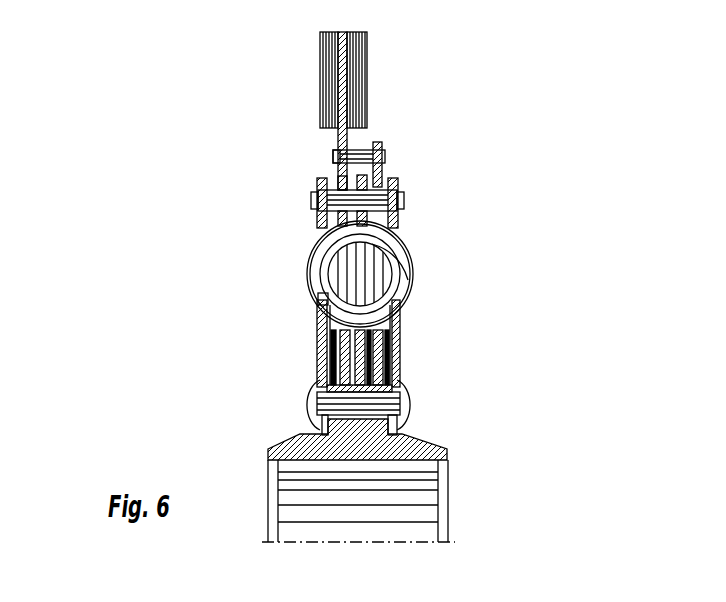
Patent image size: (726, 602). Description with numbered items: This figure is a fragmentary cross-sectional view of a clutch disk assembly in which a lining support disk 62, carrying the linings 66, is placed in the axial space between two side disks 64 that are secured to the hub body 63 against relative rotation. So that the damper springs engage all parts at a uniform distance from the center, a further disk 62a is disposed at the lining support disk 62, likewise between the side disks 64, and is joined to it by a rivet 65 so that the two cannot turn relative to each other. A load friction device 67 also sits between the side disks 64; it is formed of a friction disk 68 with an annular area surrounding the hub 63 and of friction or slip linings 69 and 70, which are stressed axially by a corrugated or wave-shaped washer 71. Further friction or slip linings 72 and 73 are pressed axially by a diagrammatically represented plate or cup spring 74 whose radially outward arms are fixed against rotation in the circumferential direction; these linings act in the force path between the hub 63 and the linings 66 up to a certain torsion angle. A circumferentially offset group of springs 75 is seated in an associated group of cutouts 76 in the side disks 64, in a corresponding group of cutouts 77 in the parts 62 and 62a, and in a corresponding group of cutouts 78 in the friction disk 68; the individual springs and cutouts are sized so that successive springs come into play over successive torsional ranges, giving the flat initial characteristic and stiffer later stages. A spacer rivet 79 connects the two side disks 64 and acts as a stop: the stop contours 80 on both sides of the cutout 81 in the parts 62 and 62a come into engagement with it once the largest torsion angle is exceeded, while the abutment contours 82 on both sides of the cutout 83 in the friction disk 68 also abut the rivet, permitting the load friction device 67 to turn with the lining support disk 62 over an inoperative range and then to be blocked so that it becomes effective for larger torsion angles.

The lining support disk 62 is at (342, 145).
The disk 62a is at (382, 175).
The hub body 63 is at (430, 453).
The side disks 64 is at (326, 353).
The rivet 65 is at (382, 149).
The linings 66 is at (328, 78).
The load friction device 67 is at (408, 410).
The friction disk 68 is at (400, 370).
The friction lining 69 is at (396, 358).
The friction lining 70 is at (331, 368).
The corrugated washer 71 is at (384, 343).
The friction lining 72 is at (396, 384).
The friction lining 73 is at (322, 340).
The cup spring 74 is at (318, 300).
The springs 75 is at (307, 272).
The cutouts 76 is at (446, 237).
The cutouts 77 is at (471, 263).
The cutouts 78 is at (414, 262).
The spacer rivet 79 is at (404, 197).
The stop contours 80 is at (316, 195).
The cutout 81 is at (357, 185).
The abutment contours 82 is at (390, 217).
The cutout 83 is at (340, 183).